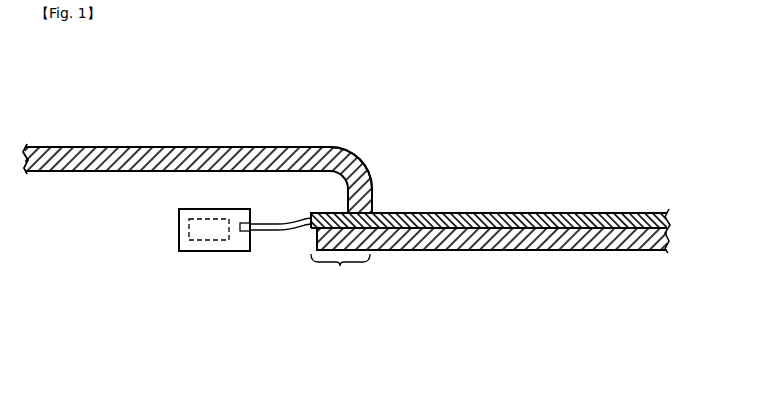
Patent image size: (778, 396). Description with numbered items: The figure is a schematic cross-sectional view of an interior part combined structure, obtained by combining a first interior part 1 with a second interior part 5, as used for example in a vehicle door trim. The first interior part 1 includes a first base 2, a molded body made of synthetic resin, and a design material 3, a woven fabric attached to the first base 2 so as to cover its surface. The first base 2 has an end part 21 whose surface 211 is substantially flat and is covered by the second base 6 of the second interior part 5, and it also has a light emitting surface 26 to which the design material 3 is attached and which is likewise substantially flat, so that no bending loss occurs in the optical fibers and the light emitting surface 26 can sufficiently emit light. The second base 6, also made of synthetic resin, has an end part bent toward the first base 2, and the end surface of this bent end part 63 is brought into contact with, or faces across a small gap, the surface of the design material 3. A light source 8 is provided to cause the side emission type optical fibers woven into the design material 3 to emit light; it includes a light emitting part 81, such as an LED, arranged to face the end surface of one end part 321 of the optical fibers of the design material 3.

The first interior part 1 is at (465, 209).
The first base 2 is at (648, 250).
The design material 3 is at (645, 212).
The second interior part 5 is at (131, 128).
The second base 6 is at (55, 172).
The light source 8 is at (220, 280).
The light emitting part 81 is at (222, 241).
The end part 21 is at (340, 278).
The light emitting surface 26 is at (504, 223).
The bent end part 63 is at (372, 174).
The surface of end part 211 is at (320, 216).
The one end part of side emission type optical fibers 321 is at (286, 229).